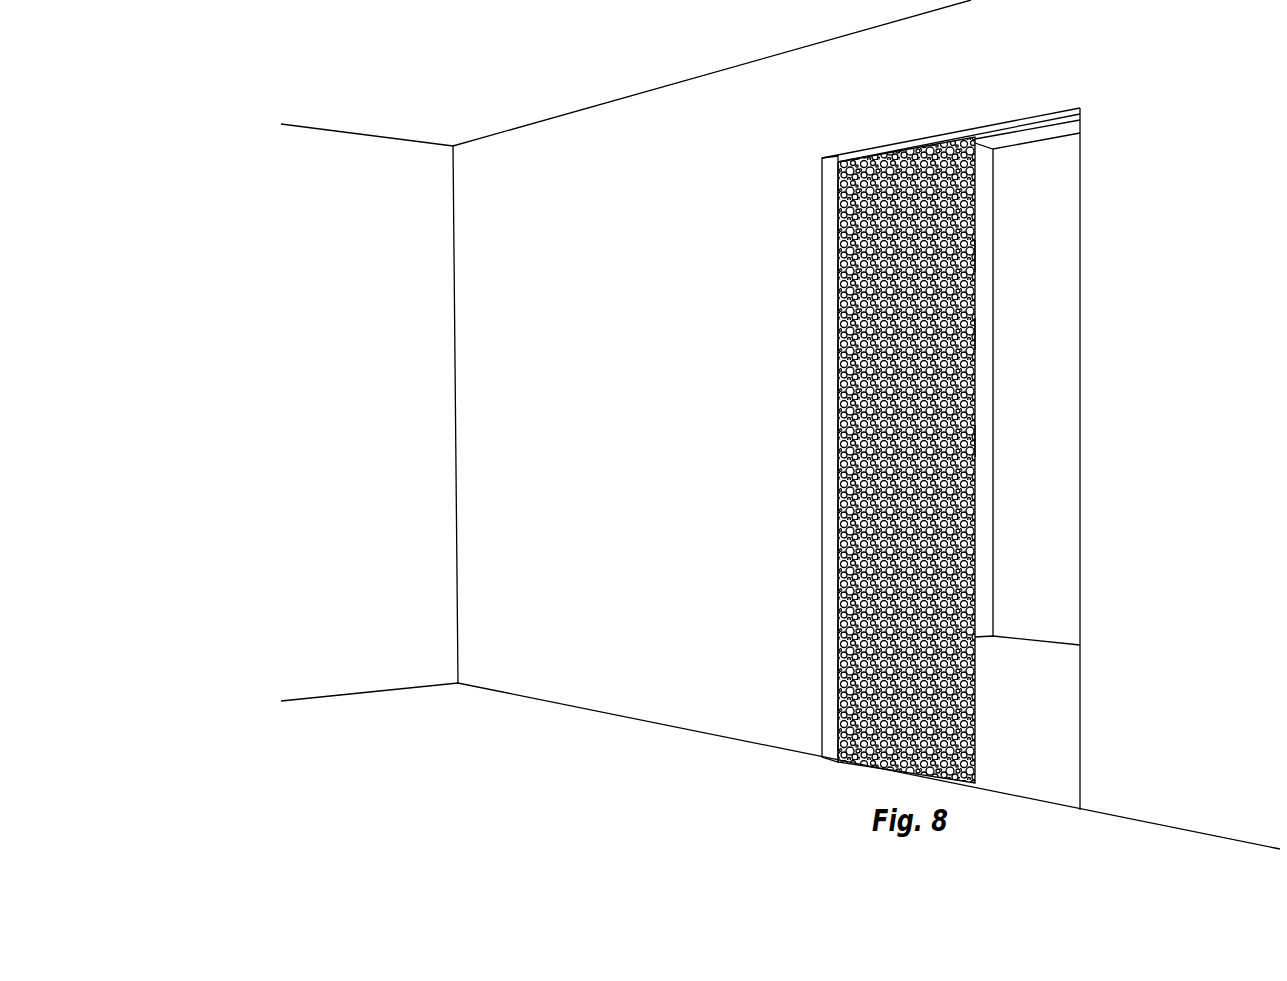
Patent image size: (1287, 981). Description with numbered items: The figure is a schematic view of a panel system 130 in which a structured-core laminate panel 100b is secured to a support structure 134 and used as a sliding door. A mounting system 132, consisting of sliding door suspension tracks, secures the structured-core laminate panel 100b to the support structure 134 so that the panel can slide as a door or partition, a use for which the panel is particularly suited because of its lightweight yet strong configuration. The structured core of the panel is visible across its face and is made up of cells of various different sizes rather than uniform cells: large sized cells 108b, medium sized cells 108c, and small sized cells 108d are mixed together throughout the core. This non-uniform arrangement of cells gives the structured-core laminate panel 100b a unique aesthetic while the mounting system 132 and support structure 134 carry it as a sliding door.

The door assembly 130 is at (785, 227).
The structured-core laminate panel 100b is at (850, 528).
The mounting system 132 is at (1030, 127).
The support structure 134 is at (937, 128).
The large sized cells 108b is at (975, 256).
The medium sized cells 108c is at (975, 333).
The small sized cells 108d is at (975, 441).